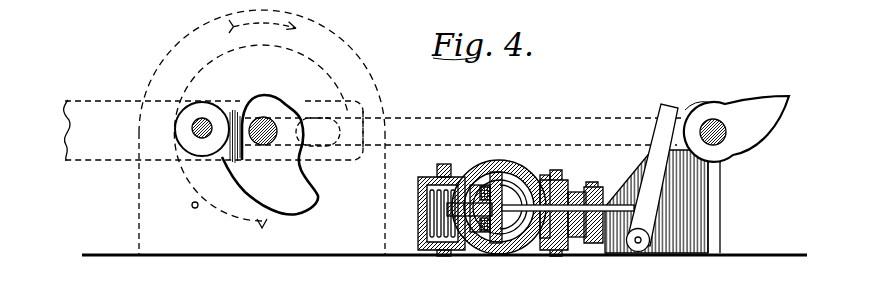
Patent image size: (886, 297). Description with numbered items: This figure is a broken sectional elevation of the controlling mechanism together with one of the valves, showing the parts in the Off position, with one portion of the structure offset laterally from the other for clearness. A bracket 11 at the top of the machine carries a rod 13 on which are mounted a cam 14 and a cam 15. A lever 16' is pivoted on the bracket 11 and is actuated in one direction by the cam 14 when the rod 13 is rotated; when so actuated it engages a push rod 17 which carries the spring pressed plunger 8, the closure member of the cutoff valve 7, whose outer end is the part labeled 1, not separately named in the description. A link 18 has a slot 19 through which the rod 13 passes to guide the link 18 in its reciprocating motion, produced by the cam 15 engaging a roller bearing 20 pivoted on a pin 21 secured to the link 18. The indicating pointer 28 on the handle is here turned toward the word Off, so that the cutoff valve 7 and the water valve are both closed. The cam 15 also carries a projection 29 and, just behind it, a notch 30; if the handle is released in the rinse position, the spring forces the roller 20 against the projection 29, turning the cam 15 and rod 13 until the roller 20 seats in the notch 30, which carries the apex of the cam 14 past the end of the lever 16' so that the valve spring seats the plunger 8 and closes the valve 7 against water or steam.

The valve spring cap 1 is at (418, 207).
The cutoff valve 7 is at (523, 174).
The spring pressed plunger 8 is at (480, 232).
The bracket 11 is at (752, 219).
The rod 13 is at (266, 119).
The cam 14 is at (757, 138).
The cam 15 is at (304, 198).
The lever 16' is at (668, 161).
The push rod 17 is at (609, 205).
The link 18 is at (108, 147).
The slot 19 is at (342, 167).
The roller bearing 20 is at (200, 150).
The pin 21 is at (196, 129).
The indicating pointer 28 is at (250, 228).
The projection 29 is at (292, 111).
The notch 30 is at (282, 103).